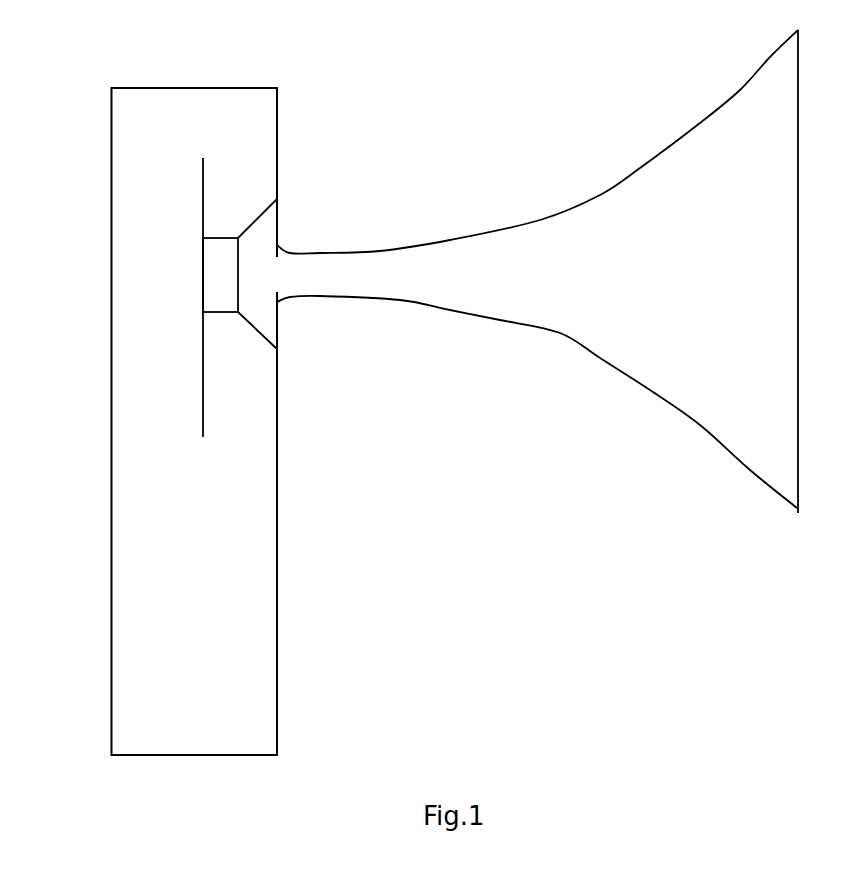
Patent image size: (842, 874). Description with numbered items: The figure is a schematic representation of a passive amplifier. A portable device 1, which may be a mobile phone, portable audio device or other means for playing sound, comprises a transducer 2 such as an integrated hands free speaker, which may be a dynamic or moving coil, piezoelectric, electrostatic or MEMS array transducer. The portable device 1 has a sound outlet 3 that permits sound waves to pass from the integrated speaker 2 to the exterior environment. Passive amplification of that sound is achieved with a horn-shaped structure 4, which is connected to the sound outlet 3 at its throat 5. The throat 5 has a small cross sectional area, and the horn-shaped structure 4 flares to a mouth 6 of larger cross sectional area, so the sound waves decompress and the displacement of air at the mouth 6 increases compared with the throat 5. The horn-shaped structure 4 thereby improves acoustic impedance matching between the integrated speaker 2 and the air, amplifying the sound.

The portable device 1 is at (128, 203).
The transducer 2 is at (228, 280).
The sound outlet 3 is at (275, 273).
The horn-shaped structure 4 is at (537, 298).
The throat 5 is at (297, 303).
The mouth 6 is at (797, 510).